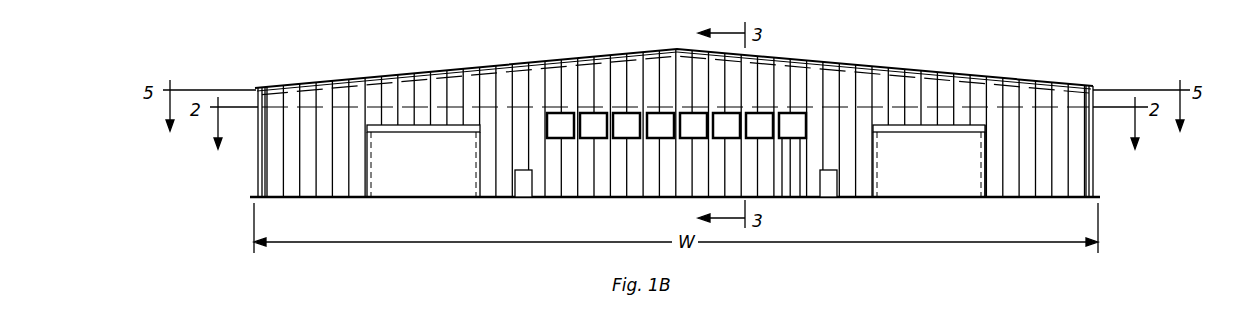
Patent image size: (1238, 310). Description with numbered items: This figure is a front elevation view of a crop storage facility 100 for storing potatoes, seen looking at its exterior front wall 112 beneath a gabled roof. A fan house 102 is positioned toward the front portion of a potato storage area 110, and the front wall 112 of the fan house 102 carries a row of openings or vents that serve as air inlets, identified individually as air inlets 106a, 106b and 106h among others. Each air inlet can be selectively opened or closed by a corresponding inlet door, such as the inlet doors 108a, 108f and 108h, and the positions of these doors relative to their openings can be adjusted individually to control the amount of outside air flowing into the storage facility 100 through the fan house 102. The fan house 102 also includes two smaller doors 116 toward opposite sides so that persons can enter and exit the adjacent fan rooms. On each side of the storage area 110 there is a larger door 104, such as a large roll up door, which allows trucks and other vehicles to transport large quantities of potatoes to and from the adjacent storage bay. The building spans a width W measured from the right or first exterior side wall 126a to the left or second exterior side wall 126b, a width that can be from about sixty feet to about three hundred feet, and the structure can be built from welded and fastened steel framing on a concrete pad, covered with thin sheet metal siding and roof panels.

The storage facility 100 is at (883, 28).
The fan house 102 is at (587, 62).
The larger door 104 is at (415, 172).
The air inlet 106a is at (805, 140).
The air inlet 106b is at (782, 138).
The air inlet 106h is at (527, 175).
The inlet door 108a is at (795, 118).
The inlet door 108f is at (620, 118).
The inlet door 108h is at (556, 118).
The potato storage area 110 is at (985, 80).
The exterior front wall 112 is at (516, 75).
The smaller door 116 is at (833, 183).
The first exterior side wall 126a is at (1093, 165).
The second exterior side wall 126b is at (258, 170).